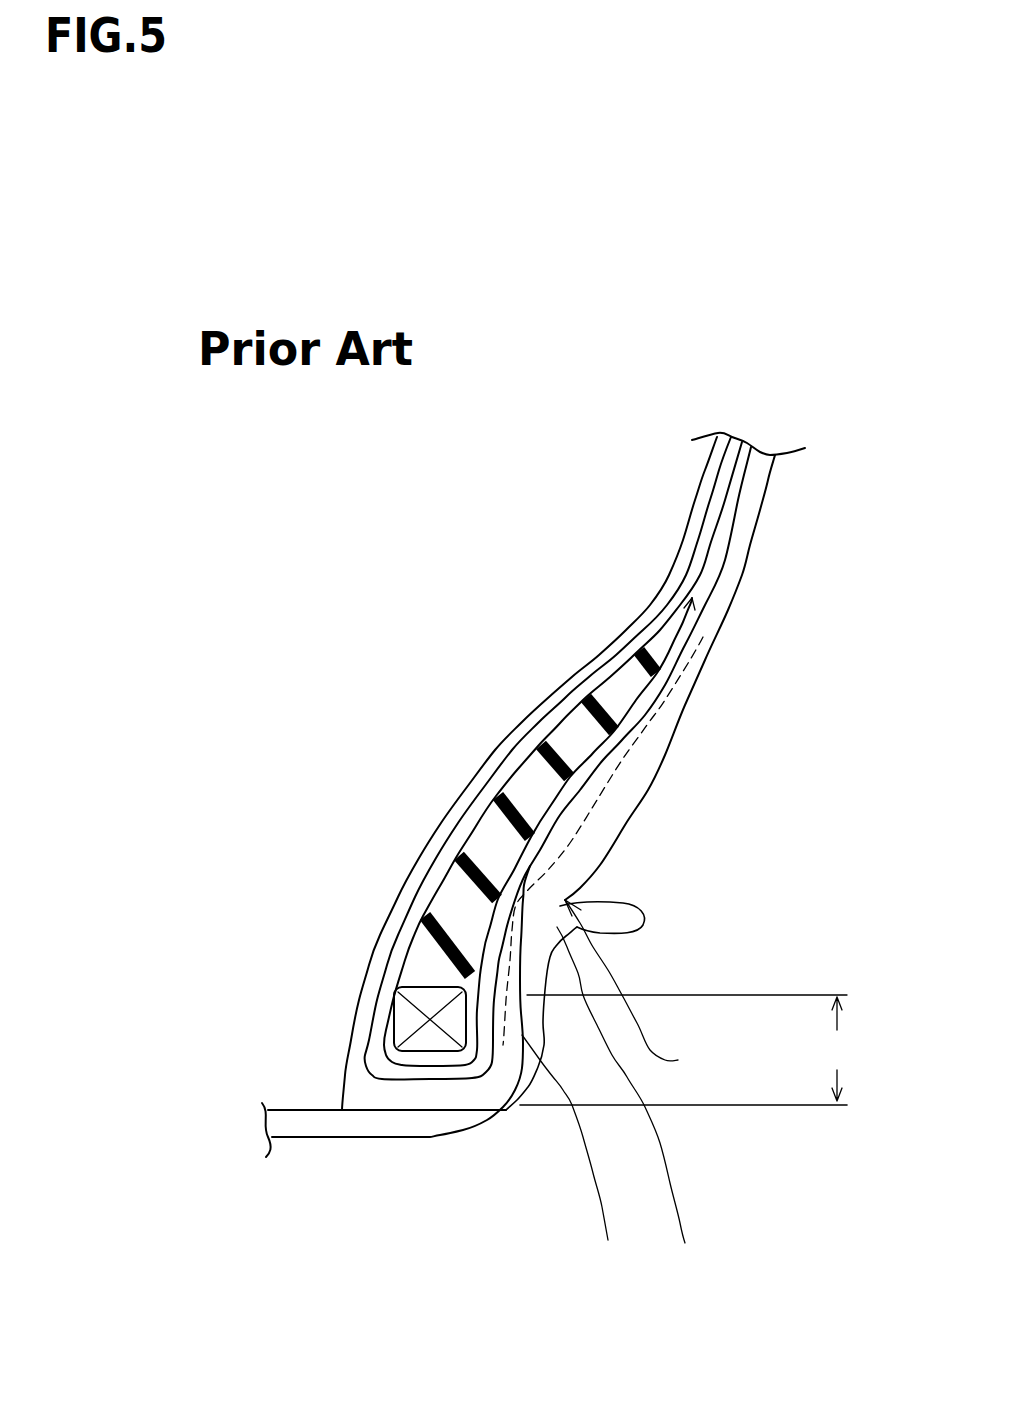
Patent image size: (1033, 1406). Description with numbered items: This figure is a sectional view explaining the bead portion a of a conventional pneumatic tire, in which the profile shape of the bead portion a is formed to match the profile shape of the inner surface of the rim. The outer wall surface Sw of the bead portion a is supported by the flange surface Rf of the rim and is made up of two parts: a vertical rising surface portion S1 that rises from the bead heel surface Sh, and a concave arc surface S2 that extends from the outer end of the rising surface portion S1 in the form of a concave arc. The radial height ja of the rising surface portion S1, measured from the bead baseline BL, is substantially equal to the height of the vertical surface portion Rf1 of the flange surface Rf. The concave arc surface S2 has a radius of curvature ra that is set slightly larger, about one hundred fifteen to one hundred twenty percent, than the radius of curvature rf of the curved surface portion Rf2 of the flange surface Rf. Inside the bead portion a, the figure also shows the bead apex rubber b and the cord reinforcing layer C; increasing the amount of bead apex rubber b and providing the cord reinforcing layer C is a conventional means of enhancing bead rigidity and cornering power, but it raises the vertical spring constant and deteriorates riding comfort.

The bead portion a is at (375, 863).
The bead apex rubber b is at (493, 840).
The cord reinforcing layer C is at (647, 725).
The outer wall surface Sw is at (177, 882).
The vertical rising surface portion S1 is at (540, 1003).
The concave arc surface S2 is at (572, 937).
The radius of curvature of the concave arc surface ra is at (626, 985).
The radius of curvature of the curved surface portion rf is at (636, 992).
The flange surface Rf is at (618, 1124).
The vertical surface portion Rf1 is at (577, 1160).
The curved surface portion Rf2 is at (570, 1270).
The bead baseline BL is at (748, 1107).
The bead heel surface Sh is at (527, 1080).
The radial height of the rising surface portion ja is at (702, 1048).